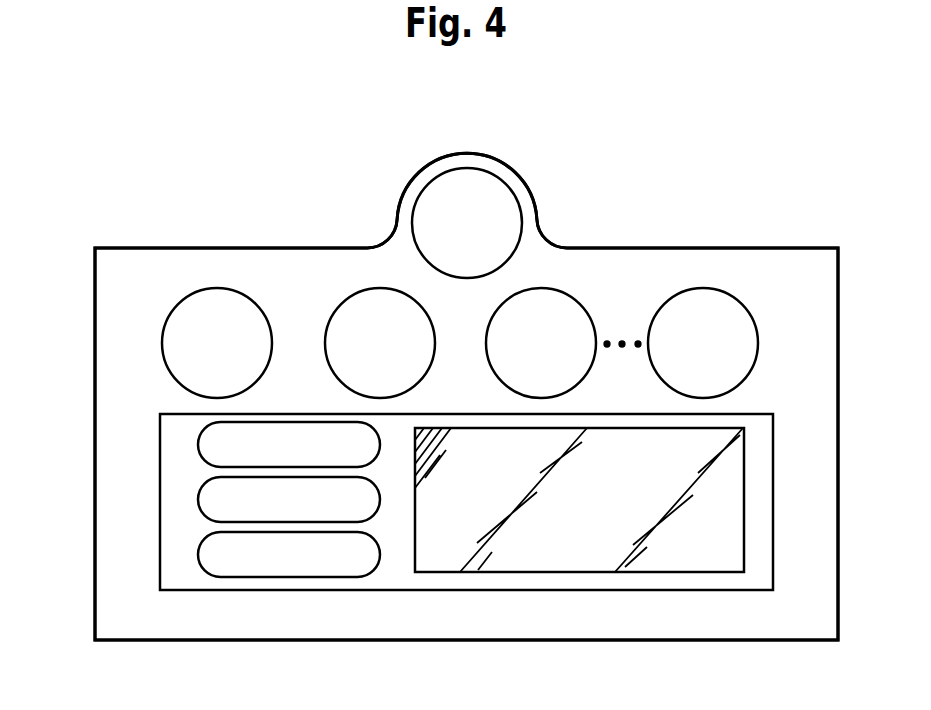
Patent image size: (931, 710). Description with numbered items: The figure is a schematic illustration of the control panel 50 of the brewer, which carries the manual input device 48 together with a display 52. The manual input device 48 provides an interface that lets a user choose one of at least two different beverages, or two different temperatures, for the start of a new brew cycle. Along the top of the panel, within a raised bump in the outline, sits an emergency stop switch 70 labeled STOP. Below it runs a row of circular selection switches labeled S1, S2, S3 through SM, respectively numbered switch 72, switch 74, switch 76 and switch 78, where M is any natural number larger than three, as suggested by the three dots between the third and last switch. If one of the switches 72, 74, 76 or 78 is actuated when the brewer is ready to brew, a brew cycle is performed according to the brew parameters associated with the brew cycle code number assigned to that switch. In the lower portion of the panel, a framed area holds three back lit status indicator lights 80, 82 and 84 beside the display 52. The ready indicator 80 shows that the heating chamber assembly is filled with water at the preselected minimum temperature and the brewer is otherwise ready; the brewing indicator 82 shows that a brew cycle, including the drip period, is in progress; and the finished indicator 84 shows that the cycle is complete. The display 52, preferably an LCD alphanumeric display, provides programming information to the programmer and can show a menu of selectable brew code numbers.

The manual input device 48 is at (676, 198).
The control panel 50 is at (578, 631).
The display 52 is at (690, 560).
The emergency stop switch 70 is at (497, 197).
The switch S1 72 is at (213, 305).
The switch S2 74 is at (358, 305).
The switch S3 76 is at (558, 305).
The switch SM 78 is at (730, 305).
The ready status indicator light 80 is at (206, 448).
The brewing status indicator light 82 is at (206, 506).
The finished status indicator light 84 is at (206, 565).